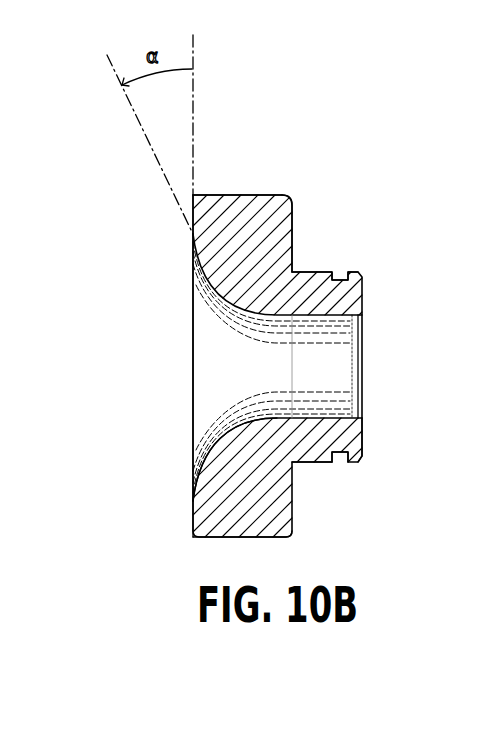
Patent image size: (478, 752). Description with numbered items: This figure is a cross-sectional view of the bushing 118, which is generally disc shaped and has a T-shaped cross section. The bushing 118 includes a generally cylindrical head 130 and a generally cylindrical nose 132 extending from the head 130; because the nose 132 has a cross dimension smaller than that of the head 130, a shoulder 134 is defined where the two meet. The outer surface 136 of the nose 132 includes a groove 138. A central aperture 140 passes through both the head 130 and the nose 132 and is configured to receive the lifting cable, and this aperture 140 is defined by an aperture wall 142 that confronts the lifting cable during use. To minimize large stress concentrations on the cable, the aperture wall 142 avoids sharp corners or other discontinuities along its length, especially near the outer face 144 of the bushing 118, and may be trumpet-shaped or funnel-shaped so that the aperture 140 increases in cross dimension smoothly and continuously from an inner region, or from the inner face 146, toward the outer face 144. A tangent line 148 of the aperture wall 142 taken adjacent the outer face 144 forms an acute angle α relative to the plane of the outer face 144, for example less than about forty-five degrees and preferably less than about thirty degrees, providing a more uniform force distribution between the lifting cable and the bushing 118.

The bushing 118 is at (414, 222).
The head 130 is at (243, 194).
The nose 132 is at (316, 271).
The shoulder 134 is at (294, 213).
The outer surface 136 is at (309, 466).
The groove 138 is at (341, 460).
The central aperture 140 is at (192, 371).
The aperture wall 142 is at (214, 453).
The outer face 144 is at (191, 524).
The inner face 146 is at (364, 438).
The tangent line 148 is at (150, 152).